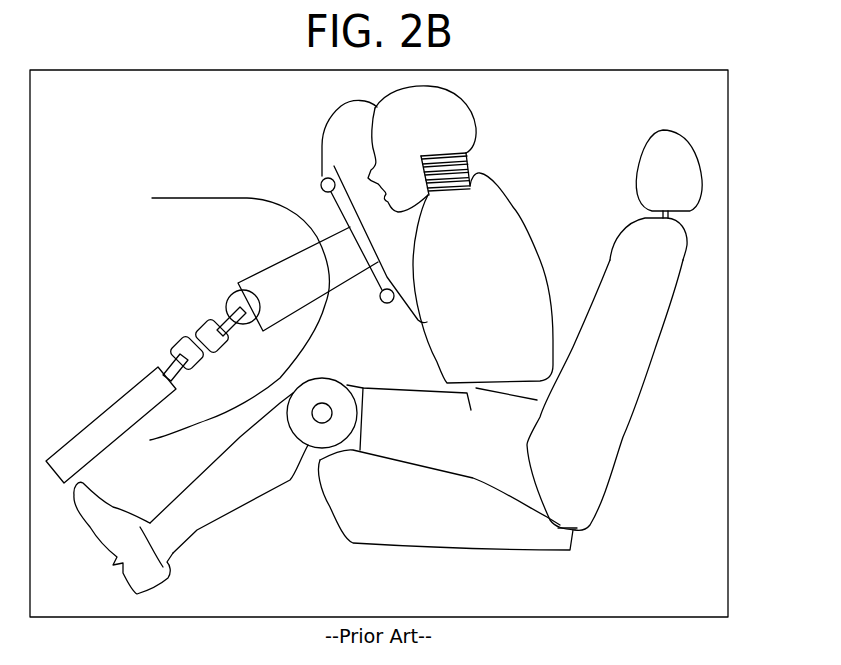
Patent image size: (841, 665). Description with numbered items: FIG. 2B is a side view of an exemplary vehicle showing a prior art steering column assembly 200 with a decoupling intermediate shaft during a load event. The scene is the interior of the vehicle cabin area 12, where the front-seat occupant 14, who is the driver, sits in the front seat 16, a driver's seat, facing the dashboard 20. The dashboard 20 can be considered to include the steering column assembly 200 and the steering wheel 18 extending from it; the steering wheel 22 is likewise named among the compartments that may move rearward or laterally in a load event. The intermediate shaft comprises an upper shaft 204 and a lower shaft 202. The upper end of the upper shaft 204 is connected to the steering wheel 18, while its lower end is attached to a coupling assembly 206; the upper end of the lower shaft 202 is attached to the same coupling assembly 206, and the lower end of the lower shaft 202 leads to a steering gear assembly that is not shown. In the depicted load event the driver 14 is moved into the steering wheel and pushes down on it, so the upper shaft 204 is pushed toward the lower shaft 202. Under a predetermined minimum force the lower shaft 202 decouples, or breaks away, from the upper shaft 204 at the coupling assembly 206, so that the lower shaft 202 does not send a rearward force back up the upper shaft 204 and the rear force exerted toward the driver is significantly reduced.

The vehicle cabin area 12 is at (658, 66).
The front-seat occupant 14 is at (513, 258).
The front seat 16 is at (590, 453).
The steering wheel 18 is at (324, 178).
The dashboard 20 is at (208, 198).
The steering wheel 22 is at (338, 127).
The steering column assembly 200 is at (116, 310).
The lower shaft 202 is at (128, 395).
The upper shaft 204 is at (222, 320).
The coupling assembly 206 is at (183, 335).